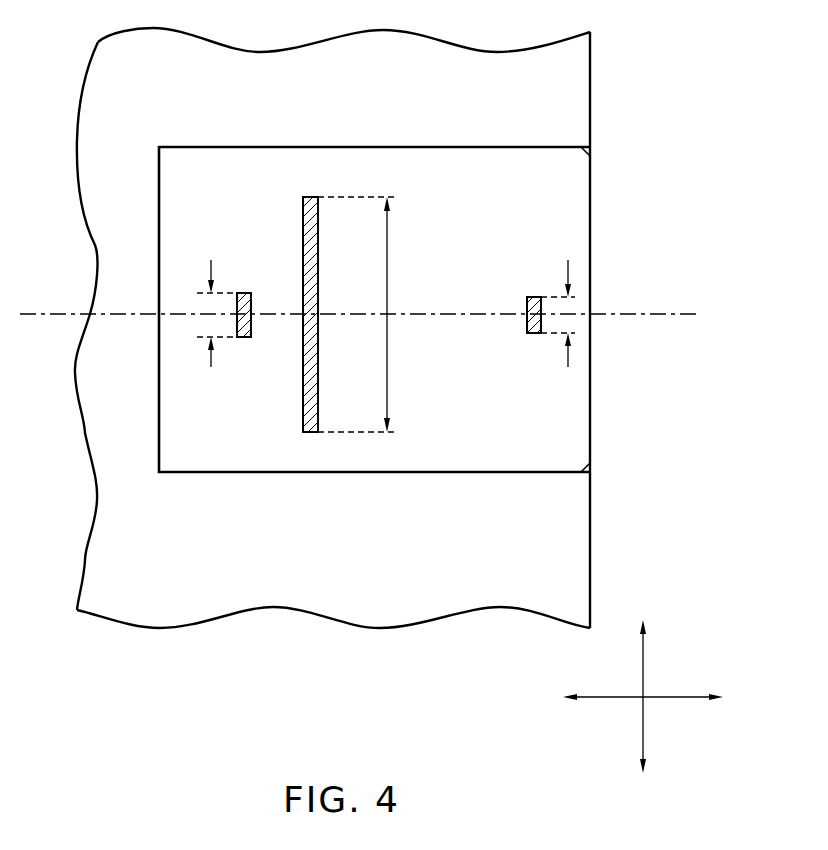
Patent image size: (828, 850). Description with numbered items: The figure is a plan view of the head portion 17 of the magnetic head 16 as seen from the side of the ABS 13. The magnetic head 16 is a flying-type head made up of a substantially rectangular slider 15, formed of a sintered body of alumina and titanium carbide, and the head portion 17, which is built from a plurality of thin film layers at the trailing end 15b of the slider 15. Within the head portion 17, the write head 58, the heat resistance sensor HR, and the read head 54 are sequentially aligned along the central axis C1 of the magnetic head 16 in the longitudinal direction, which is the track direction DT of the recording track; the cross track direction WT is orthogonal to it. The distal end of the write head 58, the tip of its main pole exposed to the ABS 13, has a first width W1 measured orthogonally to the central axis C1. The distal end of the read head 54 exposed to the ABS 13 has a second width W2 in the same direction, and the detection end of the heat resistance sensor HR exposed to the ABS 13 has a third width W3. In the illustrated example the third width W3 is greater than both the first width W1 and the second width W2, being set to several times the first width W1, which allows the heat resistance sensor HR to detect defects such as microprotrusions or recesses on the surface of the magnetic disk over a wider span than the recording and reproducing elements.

The ABS 13 is at (278, 67).
The slider 15 is at (112, 242).
The trailing end 15b is at (591, 543).
The magnetic head 16 is at (562, 100).
The head portion 17 is at (210, 138).
The read head 54 is at (250, 293).
The write head 58 is at (538, 297).
The heat resistance sensor HR is at (303, 214).
The central axis C1 is at (671, 312).
The first width W1 is at (563, 325).
The second width W2 is at (213, 325).
The third width W3 is at (356, 314).
The cross track direction WT is at (663, 689).
The track direction DT is at (639, 713).